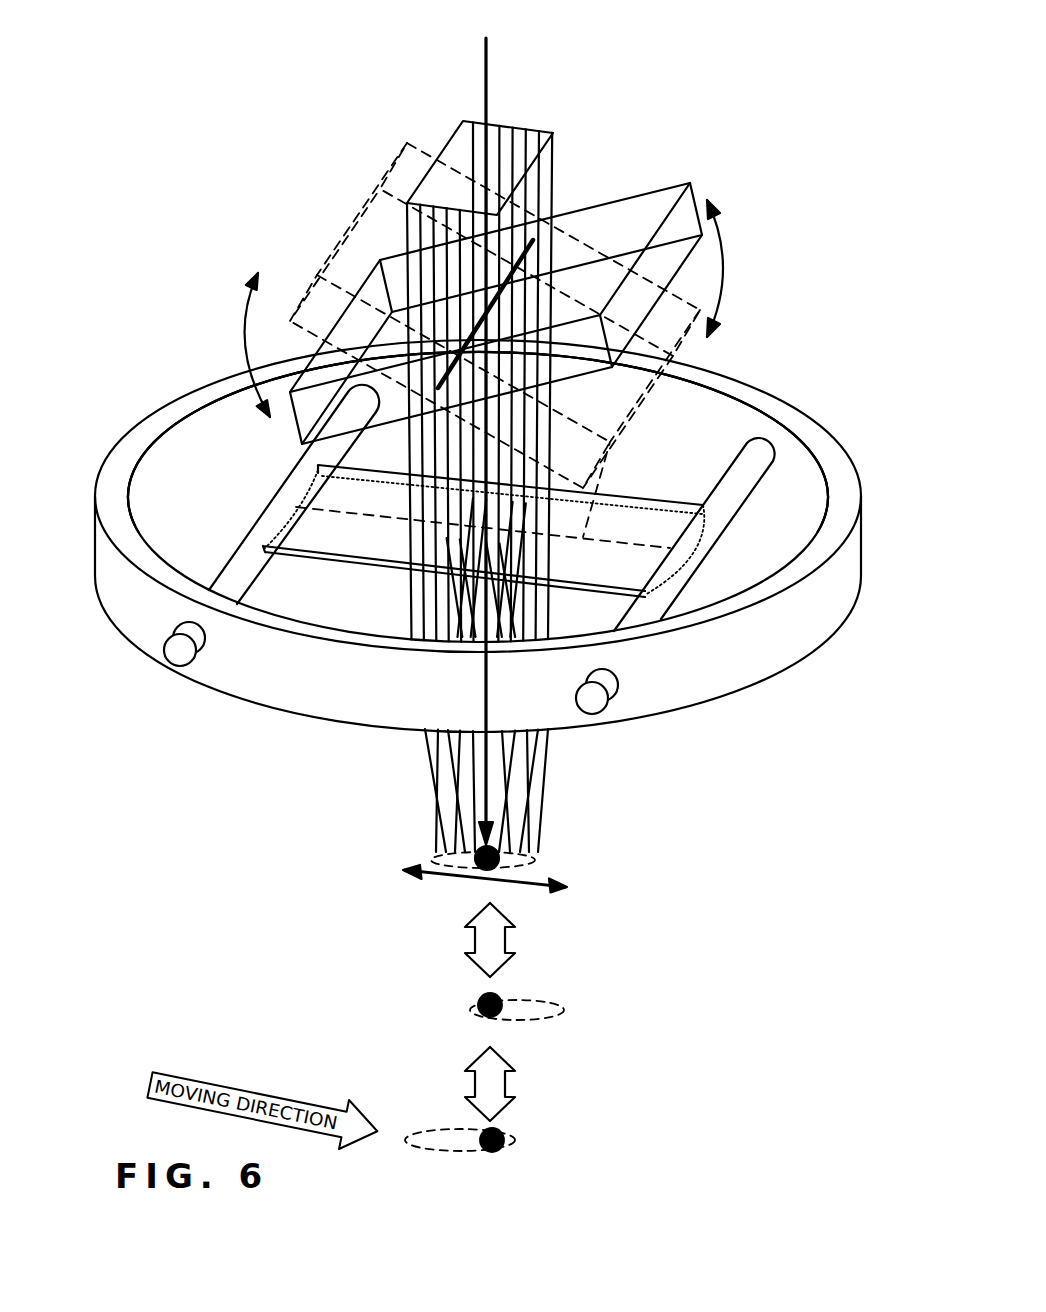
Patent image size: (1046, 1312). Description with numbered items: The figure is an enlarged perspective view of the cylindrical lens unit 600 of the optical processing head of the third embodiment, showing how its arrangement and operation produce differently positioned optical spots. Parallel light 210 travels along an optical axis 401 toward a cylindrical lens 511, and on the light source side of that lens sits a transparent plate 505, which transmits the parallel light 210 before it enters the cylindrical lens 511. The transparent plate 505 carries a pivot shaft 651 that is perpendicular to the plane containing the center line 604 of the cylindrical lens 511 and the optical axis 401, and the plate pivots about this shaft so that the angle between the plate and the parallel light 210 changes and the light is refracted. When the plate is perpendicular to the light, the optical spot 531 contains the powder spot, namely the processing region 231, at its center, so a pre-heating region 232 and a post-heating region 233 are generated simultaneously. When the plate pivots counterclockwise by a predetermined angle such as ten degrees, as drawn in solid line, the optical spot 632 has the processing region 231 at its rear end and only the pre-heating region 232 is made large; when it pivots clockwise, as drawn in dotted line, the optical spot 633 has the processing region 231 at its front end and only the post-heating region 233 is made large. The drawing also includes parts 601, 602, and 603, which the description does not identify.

The cylindrical lens unit 600 is at (233, 142).
The optical axis 401 is at (488, 64).
The parallel light 210 is at (558, 162).
The pivot shaft 651 is at (535, 238).
The transparent plate 505 is at (693, 190).
The ring-shaped holder 601 is at (190, 402).
The rotation shaft 602 is at (240, 548).
The rotation shaft 603 is at (740, 503).
The cylindrical lens 511 is at (627, 517).
The center line 604 is at (601, 459).
The processing region 231 is at (495, 850).
The optical spot 531 is at (532, 857).
The pre-heating region 232 is at (590, 988).
The optical spot 632 is at (567, 1017).
The optical spot 633 is at (522, 1143).
The post-heating region 233 is at (393, 1100).